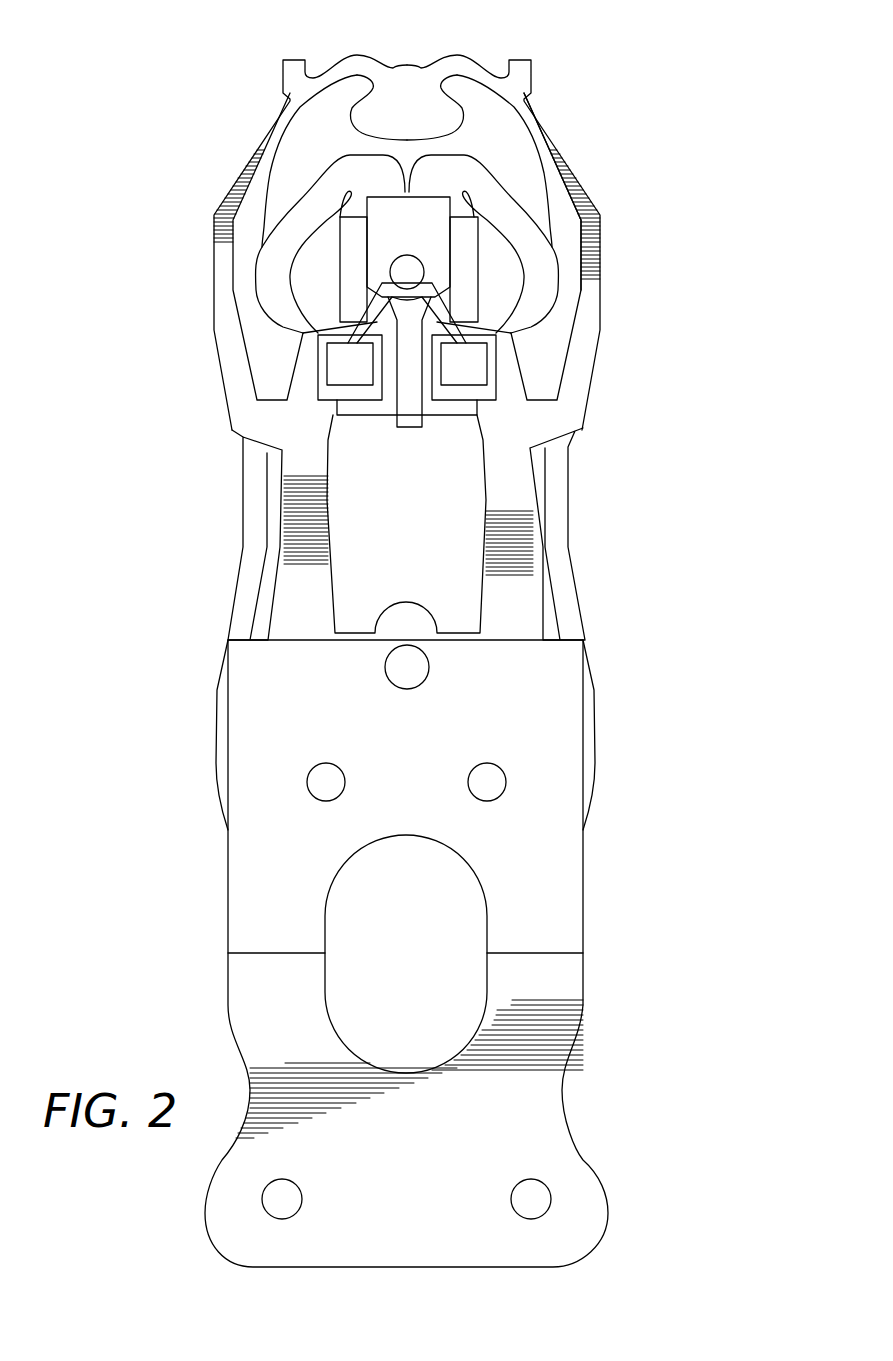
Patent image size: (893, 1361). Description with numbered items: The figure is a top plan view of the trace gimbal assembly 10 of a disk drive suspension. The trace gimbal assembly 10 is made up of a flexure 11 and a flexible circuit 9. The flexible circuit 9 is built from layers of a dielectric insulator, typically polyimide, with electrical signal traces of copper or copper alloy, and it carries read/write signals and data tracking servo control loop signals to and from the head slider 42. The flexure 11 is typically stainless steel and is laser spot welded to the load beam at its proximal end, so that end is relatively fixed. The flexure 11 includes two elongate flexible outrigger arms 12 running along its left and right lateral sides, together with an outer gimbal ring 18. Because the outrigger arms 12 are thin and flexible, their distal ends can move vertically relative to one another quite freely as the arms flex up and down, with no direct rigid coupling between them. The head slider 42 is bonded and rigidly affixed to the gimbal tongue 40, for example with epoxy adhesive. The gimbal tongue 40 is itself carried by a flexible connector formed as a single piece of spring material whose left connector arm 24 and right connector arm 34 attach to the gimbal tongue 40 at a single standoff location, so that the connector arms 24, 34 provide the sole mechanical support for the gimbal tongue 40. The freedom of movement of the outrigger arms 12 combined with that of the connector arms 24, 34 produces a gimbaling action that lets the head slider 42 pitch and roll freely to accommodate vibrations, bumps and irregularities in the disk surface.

The flexible circuit 9 is at (540, 295).
The trace gimbal assembly 10 is at (176, 281).
The flexure 11 is at (636, 870).
The outrigger arms 12 is at (510, 497).
The outer gimbal ring 18 is at (560, 177).
The left connector arm 24 is at (338, 368).
The right connector arm 34 is at (468, 366).
The gimbal tongue 40 is at (413, 212).
The head slider 42 is at (463, 280).